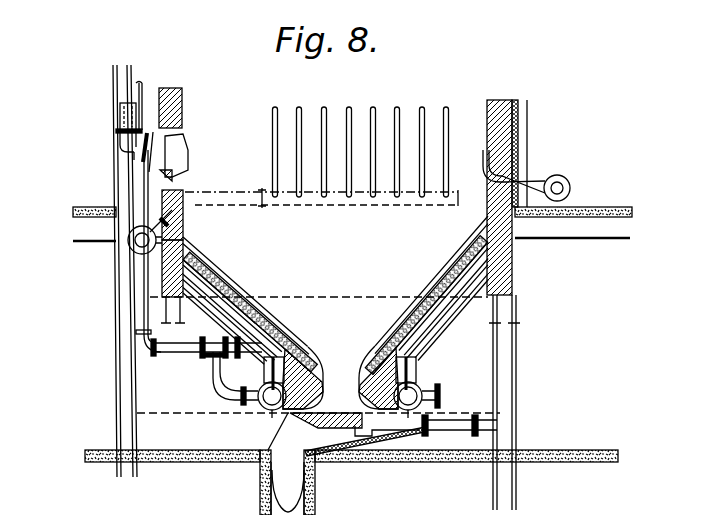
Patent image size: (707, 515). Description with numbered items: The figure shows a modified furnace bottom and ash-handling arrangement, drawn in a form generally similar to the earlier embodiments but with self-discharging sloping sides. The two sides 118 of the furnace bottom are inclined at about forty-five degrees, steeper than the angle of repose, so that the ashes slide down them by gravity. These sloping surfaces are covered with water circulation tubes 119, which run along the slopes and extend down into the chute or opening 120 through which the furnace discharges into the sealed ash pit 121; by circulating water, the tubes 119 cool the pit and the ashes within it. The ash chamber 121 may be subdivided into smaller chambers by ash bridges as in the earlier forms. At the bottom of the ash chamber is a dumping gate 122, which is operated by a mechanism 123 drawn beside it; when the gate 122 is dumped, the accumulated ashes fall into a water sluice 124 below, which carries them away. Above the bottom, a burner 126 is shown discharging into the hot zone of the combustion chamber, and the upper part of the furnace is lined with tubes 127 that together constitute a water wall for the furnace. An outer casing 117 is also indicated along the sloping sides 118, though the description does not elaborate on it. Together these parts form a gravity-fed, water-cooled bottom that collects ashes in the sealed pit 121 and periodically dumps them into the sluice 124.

The chute casing 117 is at (337, 312).
The sides of the furnace bottom 118 is at (226, 289).
The water circulation tubes 119 is at (270, 334).
The chute or opening 120 is at (320, 380).
The sealed ash pit 121 is at (355, 413).
The dumping gate 122 is at (337, 428).
The mechanism 123 is at (447, 421).
The water sluice 124 is at (286, 484).
The burner 126 is at (190, 160).
The tubes 127 is at (323, 130).